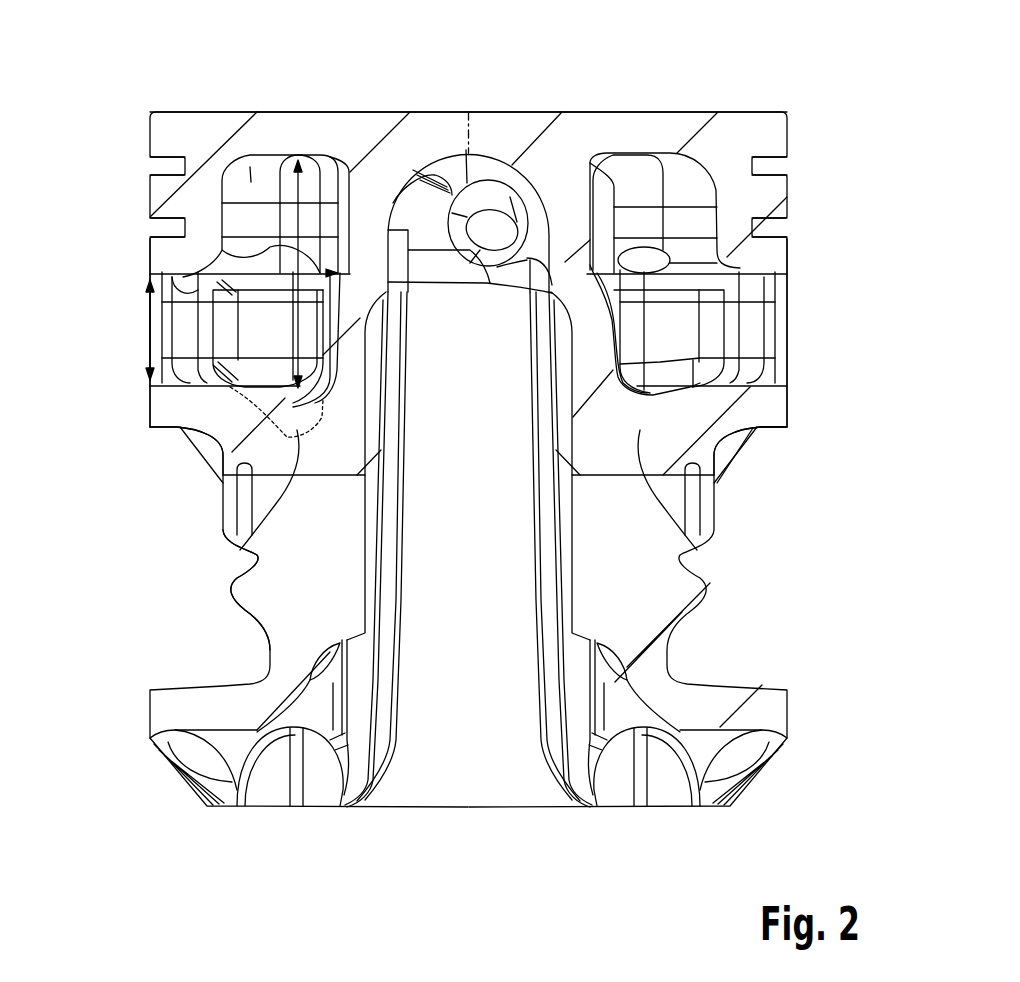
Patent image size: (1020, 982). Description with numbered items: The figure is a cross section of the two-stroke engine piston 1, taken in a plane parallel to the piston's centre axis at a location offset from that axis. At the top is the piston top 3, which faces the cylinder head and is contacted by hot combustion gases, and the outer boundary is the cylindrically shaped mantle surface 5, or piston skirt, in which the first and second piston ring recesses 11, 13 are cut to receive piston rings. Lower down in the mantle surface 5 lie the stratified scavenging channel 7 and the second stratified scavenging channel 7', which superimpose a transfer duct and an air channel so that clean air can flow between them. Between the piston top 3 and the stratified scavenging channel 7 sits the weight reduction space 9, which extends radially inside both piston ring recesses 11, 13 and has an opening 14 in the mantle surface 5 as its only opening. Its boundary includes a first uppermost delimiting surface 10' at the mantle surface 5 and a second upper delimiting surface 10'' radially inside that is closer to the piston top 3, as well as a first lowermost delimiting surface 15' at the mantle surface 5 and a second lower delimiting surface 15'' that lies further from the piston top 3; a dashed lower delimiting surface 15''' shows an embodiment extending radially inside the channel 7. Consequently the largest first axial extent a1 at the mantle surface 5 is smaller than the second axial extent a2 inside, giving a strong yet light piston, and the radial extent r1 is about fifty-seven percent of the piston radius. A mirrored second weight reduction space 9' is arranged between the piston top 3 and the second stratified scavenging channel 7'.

The two-stroke engine piston 1 is at (845, 45).
The piston top 3 is at (524, 112).
The mantle surface 5 is at (790, 397).
The stratified scavenging channel 7 is at (227, 403).
The second stratified scavenging channel 7' is at (791, 455).
The weight reduction space 9 is at (264, 162).
The second weight reduction space 9' is at (679, 288).
The first uppermost delimiting surface 10' is at (200, 332).
The second upper delimiting surface 10'' is at (320, 160).
The first piston ring recess 11 is at (772, 232).
The second piston ring recess 13 is at (772, 172).
The opening 14 is at (150, 277).
The first lowermost delimiting surface 15' is at (185, 405).
The second lower delimiting surface 15'' is at (227, 466).
The lower delimiting surface 15''' is at (185, 590).
The largest first axial extent a1 is at (150, 328).
The second axial extent a2 is at (281, 190).
The radial extent r1 is at (277, 273).